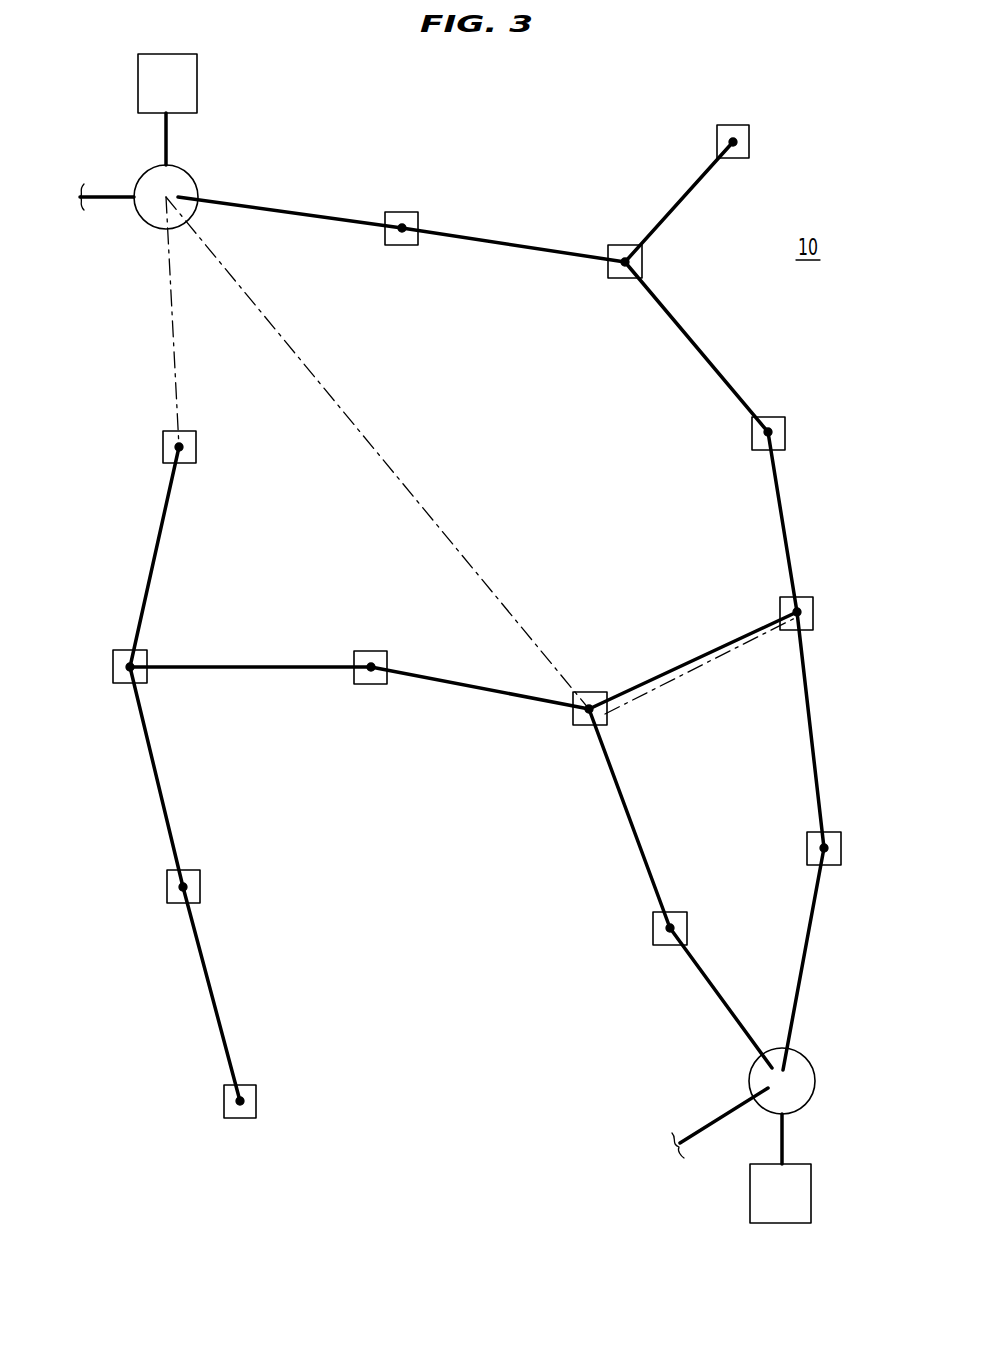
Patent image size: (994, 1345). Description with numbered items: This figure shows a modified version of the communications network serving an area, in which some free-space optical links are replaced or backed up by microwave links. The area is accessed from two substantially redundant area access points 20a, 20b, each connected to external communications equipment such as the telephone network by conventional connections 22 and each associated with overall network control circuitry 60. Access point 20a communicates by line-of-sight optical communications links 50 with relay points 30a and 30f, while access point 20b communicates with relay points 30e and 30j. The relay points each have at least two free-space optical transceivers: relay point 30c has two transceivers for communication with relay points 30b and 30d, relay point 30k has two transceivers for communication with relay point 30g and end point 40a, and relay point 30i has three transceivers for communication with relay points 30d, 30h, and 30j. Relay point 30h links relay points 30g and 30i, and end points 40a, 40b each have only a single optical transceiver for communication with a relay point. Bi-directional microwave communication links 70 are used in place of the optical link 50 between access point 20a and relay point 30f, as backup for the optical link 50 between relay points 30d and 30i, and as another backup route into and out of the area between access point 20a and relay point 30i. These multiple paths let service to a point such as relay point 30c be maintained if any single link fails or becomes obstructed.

The area access point 20a is at (193, 175).
The area access point 20b is at (750, 1073).
The connections 22 is at (98, 197).
The relay point 30a is at (405, 212).
The relay point 30b is at (642, 258).
The relay point 30c is at (785, 432).
The relay point 30d is at (813, 608).
The relay point 30e is at (807, 842).
The relay point 30f is at (196, 445).
The relay point 30g is at (113, 667).
The relay point 30h is at (370, 651).
The relay point 30i is at (590, 692).
The relay point 30j is at (687, 926).
The relay point 30k is at (200, 883).
The end point 40a is at (256, 1101).
The end point 40b is at (749, 140).
The communications link 50 is at (290, 215).
The network control circuitry 60 is at (138, 75).
The microwave communication link 70 is at (172, 335).